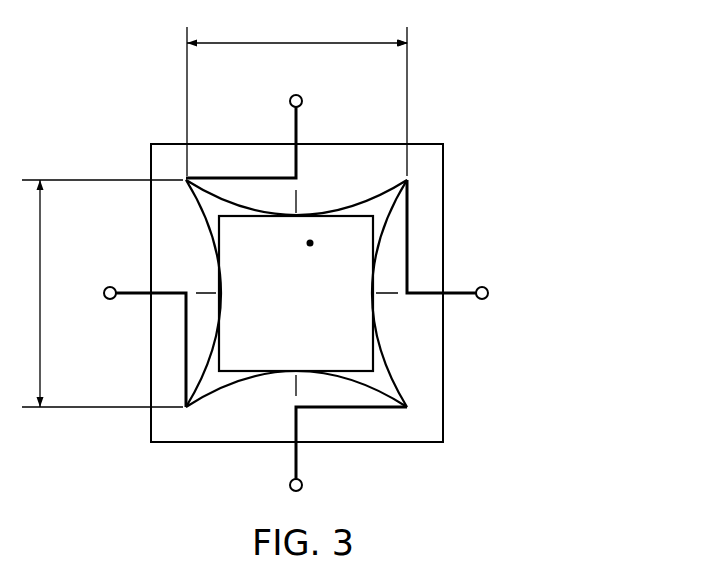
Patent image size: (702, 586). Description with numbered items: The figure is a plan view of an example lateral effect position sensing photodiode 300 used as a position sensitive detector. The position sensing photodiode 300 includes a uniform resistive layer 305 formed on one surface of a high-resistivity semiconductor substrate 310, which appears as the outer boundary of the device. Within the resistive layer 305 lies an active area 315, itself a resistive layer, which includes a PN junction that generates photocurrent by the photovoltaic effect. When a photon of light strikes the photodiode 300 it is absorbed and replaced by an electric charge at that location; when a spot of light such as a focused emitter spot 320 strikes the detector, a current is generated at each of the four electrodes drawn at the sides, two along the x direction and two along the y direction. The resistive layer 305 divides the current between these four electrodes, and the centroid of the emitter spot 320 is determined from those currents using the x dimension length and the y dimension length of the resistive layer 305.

The lateral effect position sensing photodiode 300 is at (108, 106).
The uniform resistive layer 305 is at (388, 218).
The high-resistivity semiconductor substrate 310 is at (443, 173).
The active area 315 is at (373, 350).
The focused emitter spot 320 is at (306, 243).